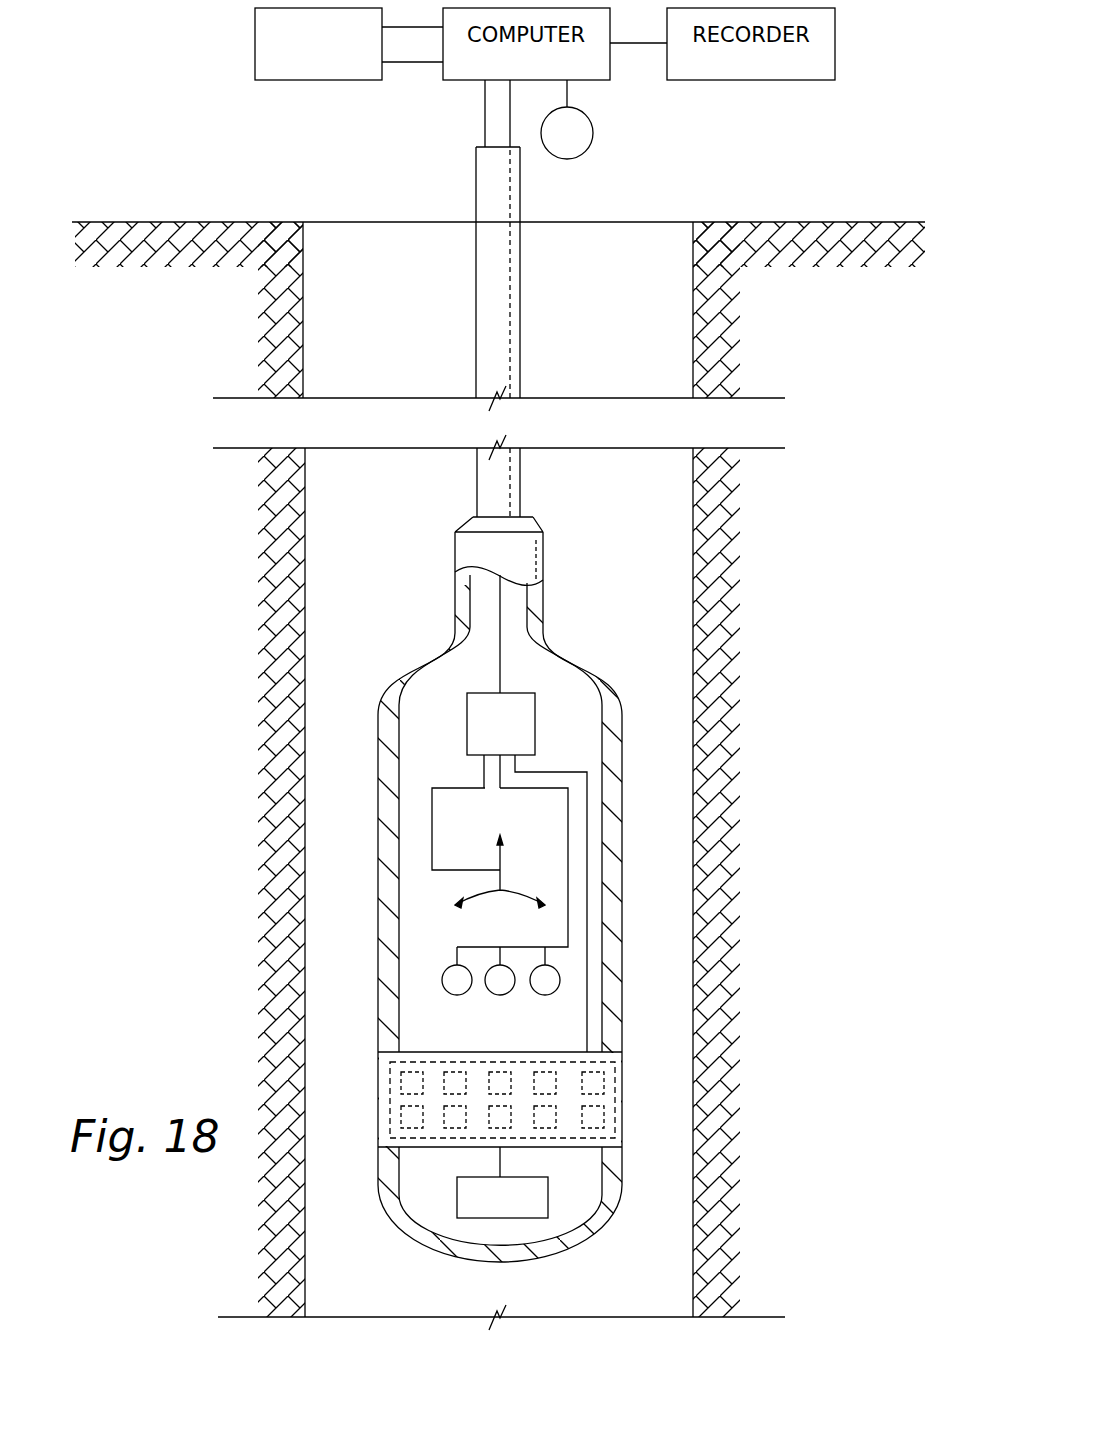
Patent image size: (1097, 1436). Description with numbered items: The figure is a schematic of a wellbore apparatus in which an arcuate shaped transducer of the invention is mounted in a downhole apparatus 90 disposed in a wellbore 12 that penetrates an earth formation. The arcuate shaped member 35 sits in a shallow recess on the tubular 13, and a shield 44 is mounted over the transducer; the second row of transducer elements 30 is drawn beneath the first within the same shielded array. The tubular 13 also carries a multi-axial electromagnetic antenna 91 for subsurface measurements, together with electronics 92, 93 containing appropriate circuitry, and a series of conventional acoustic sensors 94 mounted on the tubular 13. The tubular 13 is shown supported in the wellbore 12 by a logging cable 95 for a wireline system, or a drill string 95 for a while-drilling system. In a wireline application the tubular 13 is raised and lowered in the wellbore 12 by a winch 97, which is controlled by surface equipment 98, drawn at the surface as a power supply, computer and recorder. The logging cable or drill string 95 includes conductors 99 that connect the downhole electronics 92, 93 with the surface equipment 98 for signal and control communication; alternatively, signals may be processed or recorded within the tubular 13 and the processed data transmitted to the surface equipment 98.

The wellbore 12 is at (692, 510).
The tubular 13 is at (587, 652).
The detectors (lower row) 30 is at (400, 1117).
The arcuate shaped member 35 is at (392, 1066).
The shield 44 is at (502, 1094).
The downhole apparatus 90 is at (501, 882).
The multi-axial electromagnetic antenna 91 is at (516, 881).
The electronics 92 is at (502, 1197).
The electronics 93 is at (501, 724).
The acoustic sensors 94 is at (500, 996).
The logging cable 95 is at (475, 182).
The winch 97 is at (594, 133).
The surface equipment 98 is at (254, 37).
The conductors 99 is at (496, 104).